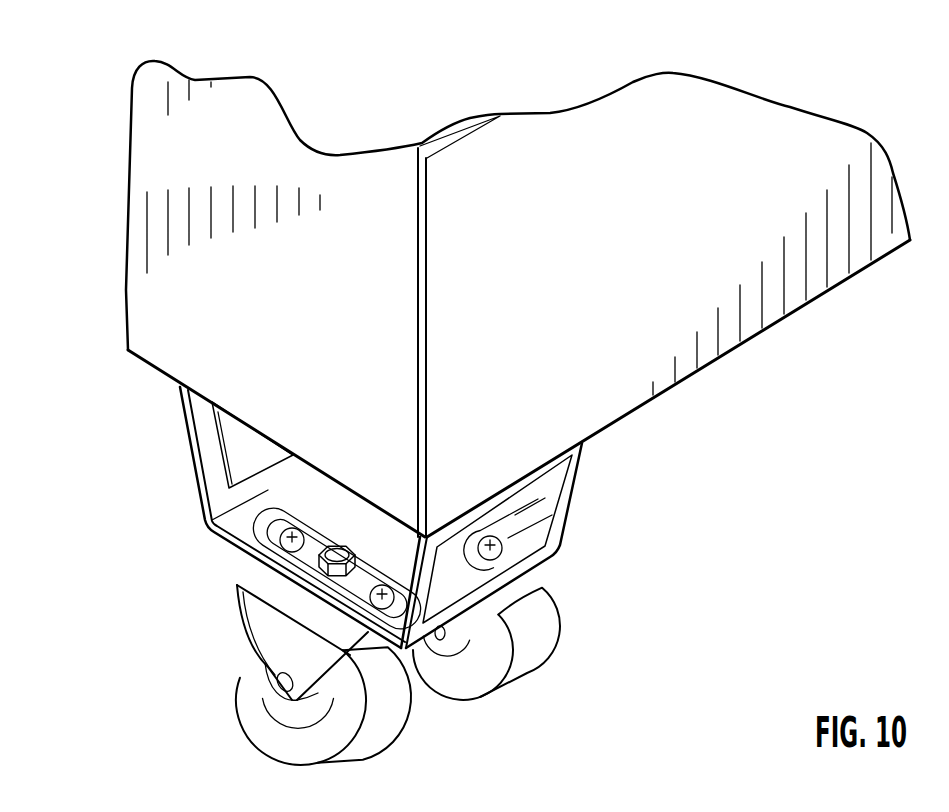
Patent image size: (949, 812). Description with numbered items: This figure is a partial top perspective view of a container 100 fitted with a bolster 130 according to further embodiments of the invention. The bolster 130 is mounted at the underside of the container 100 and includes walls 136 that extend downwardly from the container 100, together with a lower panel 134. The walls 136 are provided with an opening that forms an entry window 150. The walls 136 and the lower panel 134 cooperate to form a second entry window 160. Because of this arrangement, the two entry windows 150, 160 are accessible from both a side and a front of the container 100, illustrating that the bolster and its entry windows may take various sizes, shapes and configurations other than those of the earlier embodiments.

The container 100 is at (847, 60).
The bolster 130 is at (162, 481).
The lower panel 134 is at (243, 560).
The walls 136 is at (188, 445).
The entry window 150 is at (473, 582).
The entry window 160 is at (257, 517).